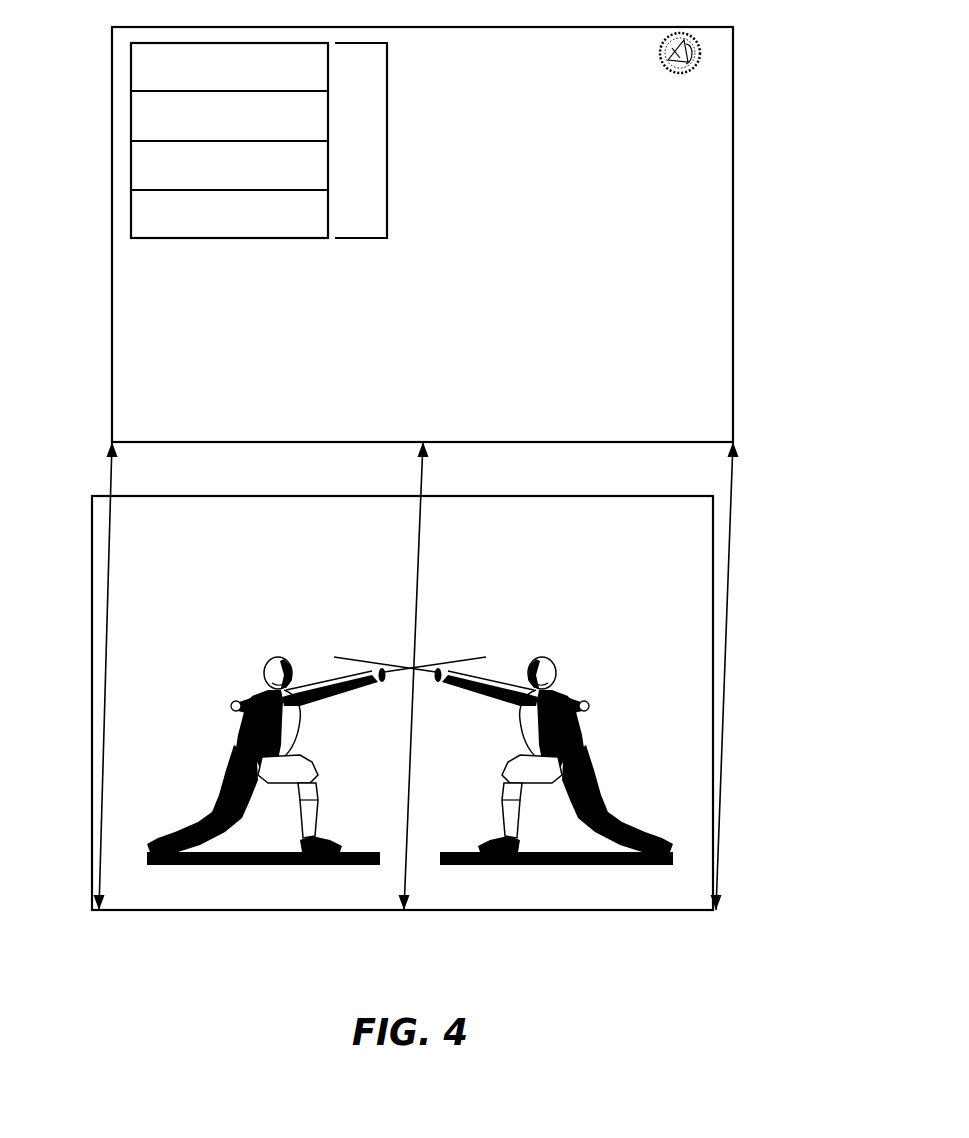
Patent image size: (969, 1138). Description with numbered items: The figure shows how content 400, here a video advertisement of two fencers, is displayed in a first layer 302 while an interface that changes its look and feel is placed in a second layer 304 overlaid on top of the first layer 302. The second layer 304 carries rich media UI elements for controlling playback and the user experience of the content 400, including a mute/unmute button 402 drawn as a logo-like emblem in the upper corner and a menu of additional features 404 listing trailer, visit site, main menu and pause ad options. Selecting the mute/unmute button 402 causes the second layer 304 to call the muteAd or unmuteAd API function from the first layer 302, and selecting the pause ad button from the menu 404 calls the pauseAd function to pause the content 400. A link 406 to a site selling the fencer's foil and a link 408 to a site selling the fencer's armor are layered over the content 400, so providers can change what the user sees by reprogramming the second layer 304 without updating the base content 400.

The first layer 302 is at (92, 712).
The second layer 304 is at (733, 228).
The content 400 is at (410, 759).
The mute/unmute button 402 is at (662, 58).
The menu of additional features 404 is at (387, 141).
The link to a site selling the fencer's foil 406 is at (455, 661).
The link to a site selling the fencer's armor 408 is at (245, 736).